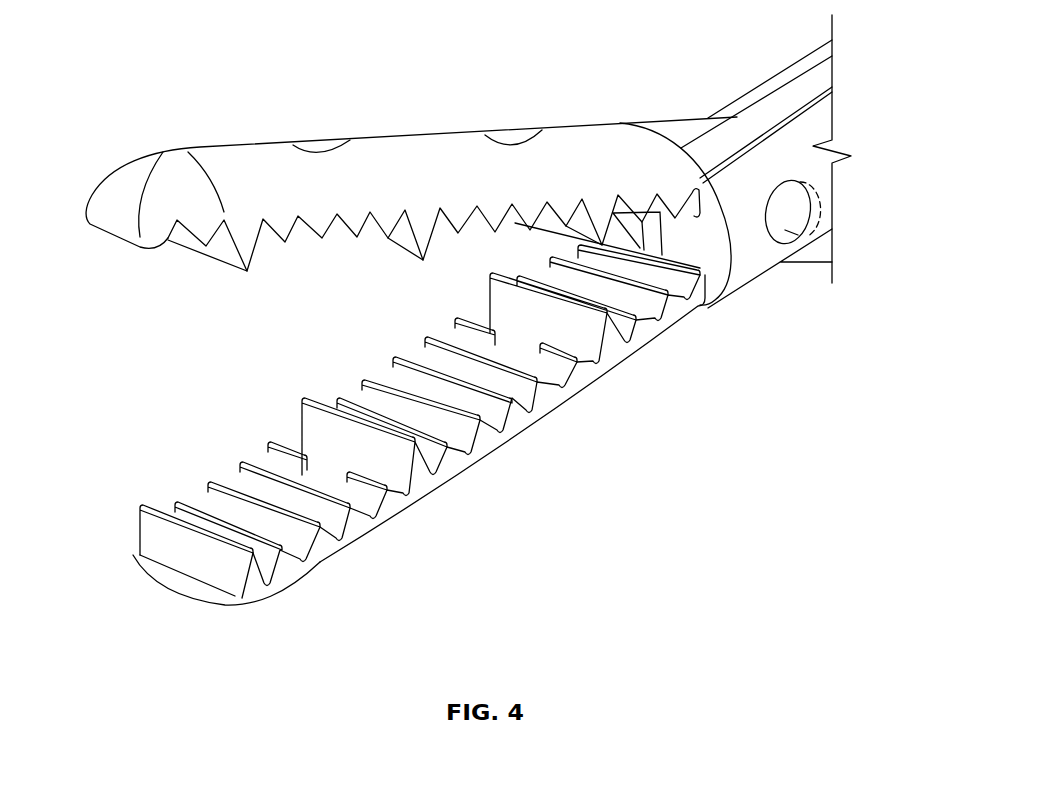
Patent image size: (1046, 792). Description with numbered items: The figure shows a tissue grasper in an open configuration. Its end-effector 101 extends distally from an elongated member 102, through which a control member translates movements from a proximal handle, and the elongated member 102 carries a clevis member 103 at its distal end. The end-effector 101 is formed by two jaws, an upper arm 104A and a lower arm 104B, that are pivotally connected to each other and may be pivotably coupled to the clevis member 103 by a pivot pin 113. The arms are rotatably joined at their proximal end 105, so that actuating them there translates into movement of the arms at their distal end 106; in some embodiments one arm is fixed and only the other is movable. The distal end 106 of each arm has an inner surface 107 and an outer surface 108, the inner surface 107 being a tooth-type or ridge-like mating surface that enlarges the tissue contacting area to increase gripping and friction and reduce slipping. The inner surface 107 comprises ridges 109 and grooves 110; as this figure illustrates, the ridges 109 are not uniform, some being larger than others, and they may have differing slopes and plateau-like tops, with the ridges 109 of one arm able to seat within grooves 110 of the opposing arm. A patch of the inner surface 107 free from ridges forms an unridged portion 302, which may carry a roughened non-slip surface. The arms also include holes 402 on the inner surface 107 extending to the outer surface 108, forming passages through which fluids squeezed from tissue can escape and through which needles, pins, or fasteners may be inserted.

The end-effector 101 is at (552, 77).
The elongated member 102 is at (797, 157).
The clevis member 103 is at (747, 262).
The upper arm 104A is at (393, 148).
The lower arm 104B is at (383, 512).
The proximal end 105 is at (812, 78).
The distal end 106 is at (130, 177).
The inner surface 107 is at (303, 232).
The outer surface 108 is at (477, 463).
The ridges 109 is at (240, 567).
The grooves 110 is at (313, 567).
The pivot pin 113 is at (795, 233).
The unridged portion 302 is at (558, 367).
The holes 402 is at (317, 143).